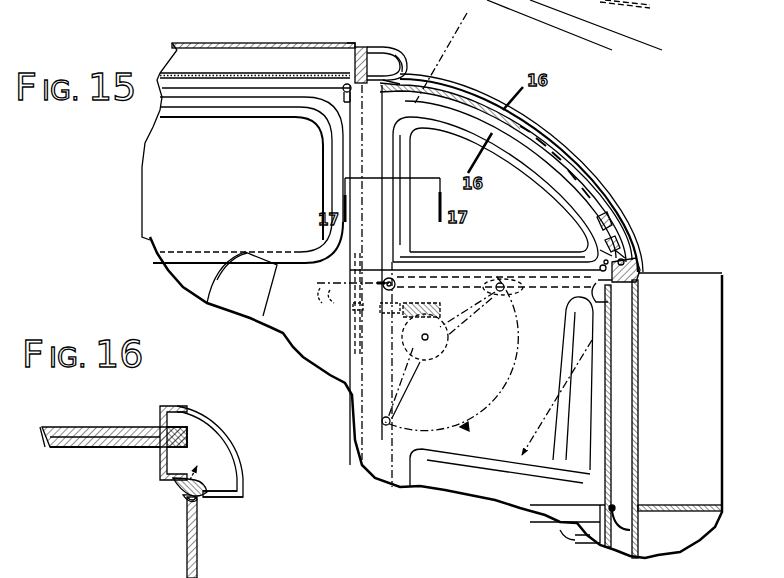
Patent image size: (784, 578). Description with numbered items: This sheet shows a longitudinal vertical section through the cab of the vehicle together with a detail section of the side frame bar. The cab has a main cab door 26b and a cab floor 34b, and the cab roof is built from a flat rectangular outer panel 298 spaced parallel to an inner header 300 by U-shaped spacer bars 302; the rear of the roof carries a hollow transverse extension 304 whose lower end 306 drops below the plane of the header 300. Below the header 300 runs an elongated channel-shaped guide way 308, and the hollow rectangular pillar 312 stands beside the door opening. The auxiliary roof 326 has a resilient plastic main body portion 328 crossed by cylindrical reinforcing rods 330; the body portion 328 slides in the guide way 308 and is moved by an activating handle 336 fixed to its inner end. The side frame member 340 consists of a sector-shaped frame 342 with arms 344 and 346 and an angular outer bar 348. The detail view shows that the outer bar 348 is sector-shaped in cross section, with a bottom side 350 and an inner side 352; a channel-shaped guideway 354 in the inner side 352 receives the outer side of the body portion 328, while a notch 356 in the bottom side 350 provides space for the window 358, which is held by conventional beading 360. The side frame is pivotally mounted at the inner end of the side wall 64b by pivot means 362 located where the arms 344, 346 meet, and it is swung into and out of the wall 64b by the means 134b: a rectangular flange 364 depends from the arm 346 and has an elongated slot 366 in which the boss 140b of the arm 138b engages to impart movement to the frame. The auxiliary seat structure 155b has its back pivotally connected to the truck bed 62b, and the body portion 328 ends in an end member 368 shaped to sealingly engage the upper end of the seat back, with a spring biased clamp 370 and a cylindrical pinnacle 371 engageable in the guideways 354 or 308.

In FIG. 15, the main cab door 26b is at (290, 315).
In FIG. 16, the main cab door 26b is at (90, 502).
In FIG. 15, the cab floor 34b is at (578, 537).
In FIG. 15, the truck bed 62b is at (650, 508).
In FIG. 15, the side wall 64b is at (593, 13).
In FIG. 15, the means for moving the side frames 134b is at (444, 356).
In FIG. 15, the arm 138b is at (466, 318).
In FIG. 15, the boss 140b is at (507, 277).
In FIG. 15, the auxiliary seat structure 155b is at (641, 396).
In FIG. 15, the outer panel 298 is at (272, 44).
In FIG. 15, the inner header 300 is at (262, 83).
In FIG. 15, the U-shaped spacer bar 302 is at (349, 46).
In FIG. 15, the transverse extension 304 is at (393, 62).
In FIG. 15, the lower end 306 is at (400, 82).
In FIG. 15, the guide way 308 is at (212, 80).
In FIG. 15, the pillar 312 is at (360, 152).
In FIG. 15, the auxiliary roof 326 is at (514, 121).
In FIG. 16, the main body portion 328 is at (120, 447).
In FIG. 15, the reinforcing rod 330 is at (440, 90).
In FIG. 16, the reinforcing rod 330 is at (77, 440).
In FIG. 15, the activating handle 336 is at (347, 95).
In FIG. 15, the side frame member 340 is at (588, 167).
In FIG. 15, the sector-shaped frame 342 is at (420, 10).
In FIG. 15, the arm 344 is at (393, 157).
In FIG. 15, the arm 346 is at (477, 267).
In FIG. 15, the outer bar 348 is at (553, 137).
In FIG. 16, the outer bar 348 is at (220, 430).
In FIG. 16, the bottom side 350 is at (227, 503).
In FIG. 16, the inner side 352 is at (160, 406).
In FIG. 16, the channel-shaped guideway 354 is at (173, 450).
In FIG. 16, the notch 356 is at (197, 515).
In FIG. 15, the window 358 is at (560, 220).
In FIG. 16, the window 358 is at (200, 567).
In FIG. 15, the beading 360 is at (430, 257).
In FIG. 16, the beading 360 is at (190, 500).
In FIG. 15, the pivot means 362 is at (353, 280).
In FIG. 15, the flange 364 is at (548, 284).
In FIG. 15, the slot 366 is at (503, 295).
In FIG. 15, the end member 368 is at (637, 262).
In FIG. 15, the spring biased clamp 370 is at (580, 298).
In FIG. 15, the cylindrical pinnacle 371 is at (627, 255).